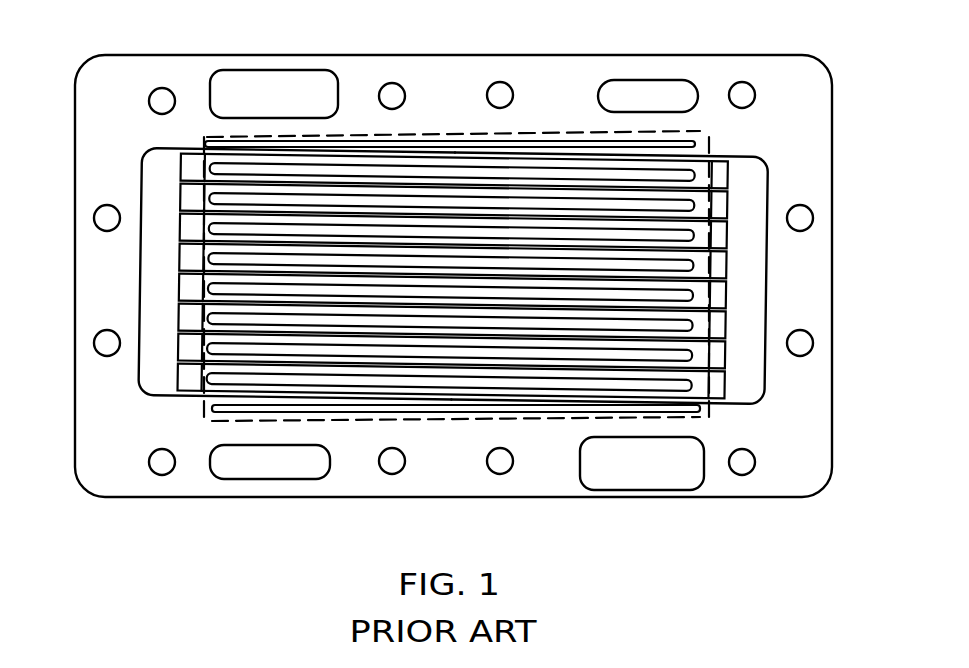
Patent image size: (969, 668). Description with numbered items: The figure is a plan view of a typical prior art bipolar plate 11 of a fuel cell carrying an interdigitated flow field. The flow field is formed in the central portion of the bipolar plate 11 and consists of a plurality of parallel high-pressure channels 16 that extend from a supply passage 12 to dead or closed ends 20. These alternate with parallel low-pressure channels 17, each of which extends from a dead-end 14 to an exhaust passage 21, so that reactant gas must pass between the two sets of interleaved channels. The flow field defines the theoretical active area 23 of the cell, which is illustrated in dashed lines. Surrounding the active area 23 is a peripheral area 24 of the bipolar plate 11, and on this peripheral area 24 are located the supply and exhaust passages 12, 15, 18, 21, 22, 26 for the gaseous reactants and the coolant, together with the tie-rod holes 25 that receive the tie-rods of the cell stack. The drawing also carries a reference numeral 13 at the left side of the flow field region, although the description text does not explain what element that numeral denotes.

The bipolar plate 11 is at (80, 338).
The supply passage 12 is at (160, 275).
The inlet manifold tabs 13 is at (180, 183).
The dead-end 14 is at (212, 167).
The supply and exhaust passage 15 is at (290, 95).
The high-pressure channels 16 is at (410, 180).
The low-pressure channels 17 is at (538, 160).
The supply and exhaust passage 18 is at (657, 95).
The dead or closed ends 20 is at (695, 174).
The exhaust passage 21 is at (747, 274).
The supply and exhaust passage 22 is at (660, 460).
The theoretical active area 23 is at (560, 421).
The peripheral area 24 is at (465, 460).
The tie-rod holes 25 is at (388, 472).
The supply and exhaust passage 26 is at (270, 462).